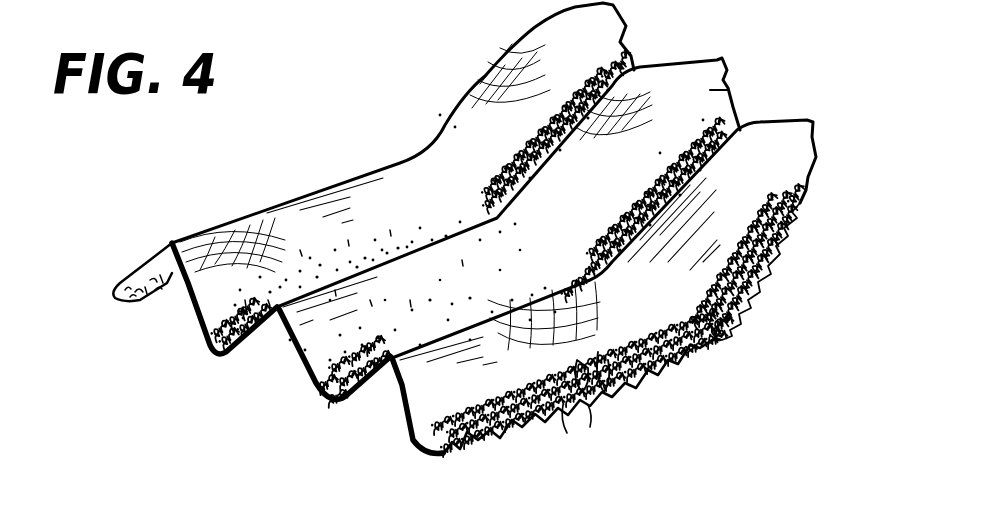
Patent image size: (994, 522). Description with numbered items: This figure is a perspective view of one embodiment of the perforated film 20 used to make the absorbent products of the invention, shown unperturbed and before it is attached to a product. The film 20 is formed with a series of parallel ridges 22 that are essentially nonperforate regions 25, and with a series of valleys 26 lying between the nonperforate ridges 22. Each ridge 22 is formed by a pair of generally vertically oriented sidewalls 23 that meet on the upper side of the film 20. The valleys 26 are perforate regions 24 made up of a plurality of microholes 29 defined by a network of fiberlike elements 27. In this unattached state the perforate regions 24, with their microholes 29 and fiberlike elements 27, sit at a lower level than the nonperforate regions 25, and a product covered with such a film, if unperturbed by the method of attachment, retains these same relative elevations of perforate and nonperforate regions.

The perforated film 20 is at (352, 152).
The parallel ridges 22 is at (290, 197).
The sidewalls 23 is at (730, 89).
The perforate regions 24 is at (210, 347).
The nonperforate regions 25 is at (589, 47).
The valleys 26 is at (632, 68).
The fiberlike elements 27 is at (580, 364).
The microholes 29 is at (552, 405).